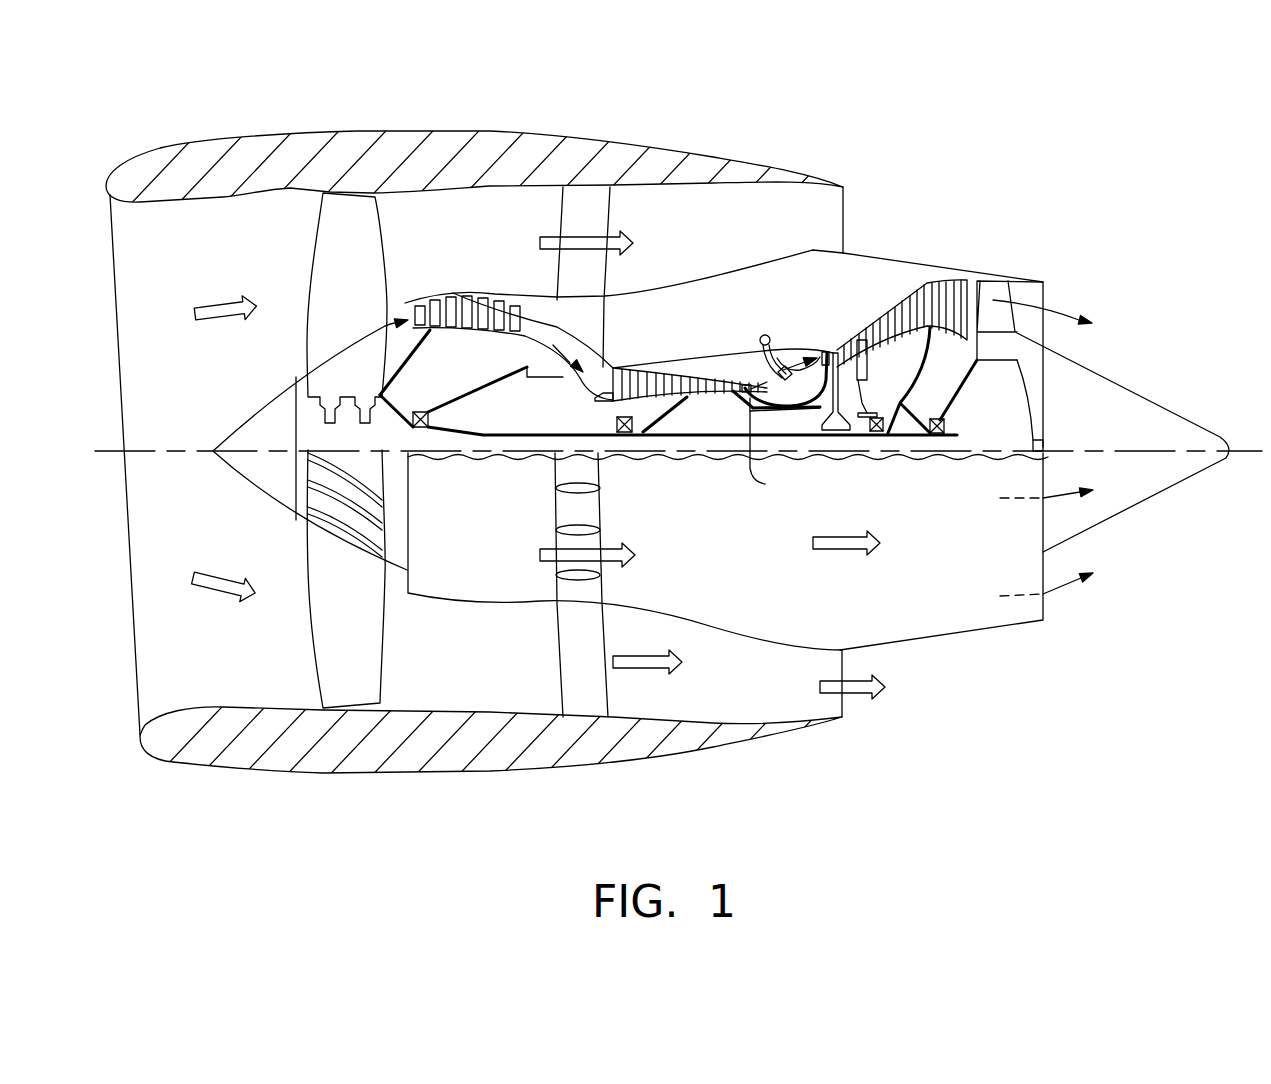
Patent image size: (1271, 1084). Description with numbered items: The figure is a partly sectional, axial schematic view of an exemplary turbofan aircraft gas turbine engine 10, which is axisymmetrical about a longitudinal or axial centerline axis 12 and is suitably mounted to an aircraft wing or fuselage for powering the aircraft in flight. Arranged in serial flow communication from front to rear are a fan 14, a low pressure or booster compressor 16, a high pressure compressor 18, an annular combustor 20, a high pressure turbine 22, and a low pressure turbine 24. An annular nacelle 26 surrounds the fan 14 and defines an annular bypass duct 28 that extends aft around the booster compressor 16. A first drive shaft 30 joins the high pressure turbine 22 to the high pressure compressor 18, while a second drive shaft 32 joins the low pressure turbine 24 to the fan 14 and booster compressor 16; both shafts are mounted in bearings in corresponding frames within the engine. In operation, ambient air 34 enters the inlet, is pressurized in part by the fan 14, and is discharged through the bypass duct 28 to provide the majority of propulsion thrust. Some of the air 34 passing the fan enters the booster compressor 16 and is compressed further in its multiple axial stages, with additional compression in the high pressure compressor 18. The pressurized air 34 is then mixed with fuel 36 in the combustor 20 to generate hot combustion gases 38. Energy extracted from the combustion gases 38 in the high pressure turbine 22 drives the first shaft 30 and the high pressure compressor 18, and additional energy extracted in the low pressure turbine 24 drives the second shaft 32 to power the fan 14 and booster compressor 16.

The turbofan aircraft gas turbine engine 10 is at (1010, 156).
The longitudinal or axial centerline axis 12 is at (1123, 451).
The fan 14 is at (360, 291).
The low pressure or booster compressor 16 is at (458, 285).
The high pressure compressor 18 is at (658, 352).
The annular combustor 20 is at (782, 350).
The high pressure turbine 22 is at (837, 327).
The low pressure turbine 24 is at (920, 266).
The annular nacelle 26 is at (380, 176).
The annular bypass duct 28 is at (707, 231).
The first drive shaft 30 is at (775, 448).
The second drive shaft 32 is at (680, 433).
The ambient air 34 is at (568, 350).
The fuel 36 is at (757, 318).
The combustion gases 38 is at (795, 353).